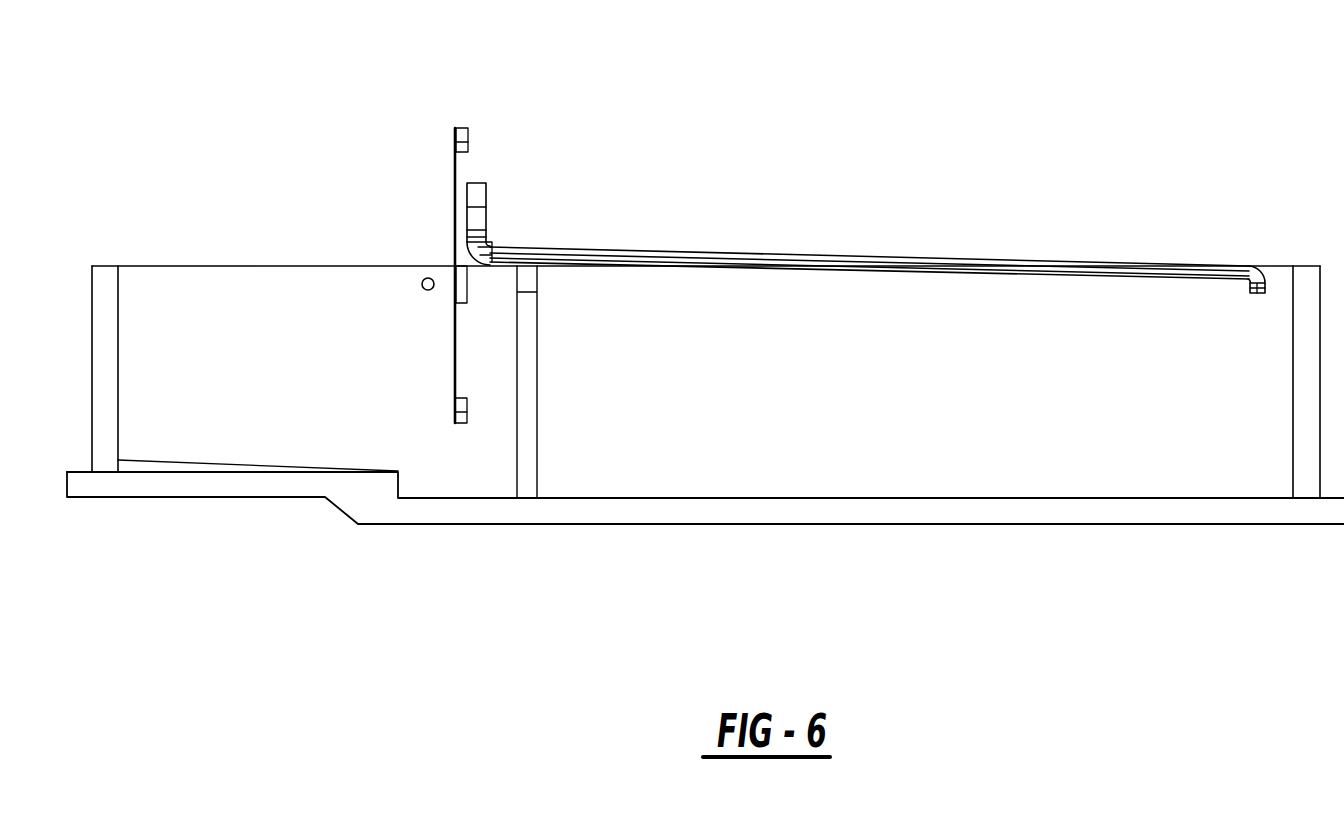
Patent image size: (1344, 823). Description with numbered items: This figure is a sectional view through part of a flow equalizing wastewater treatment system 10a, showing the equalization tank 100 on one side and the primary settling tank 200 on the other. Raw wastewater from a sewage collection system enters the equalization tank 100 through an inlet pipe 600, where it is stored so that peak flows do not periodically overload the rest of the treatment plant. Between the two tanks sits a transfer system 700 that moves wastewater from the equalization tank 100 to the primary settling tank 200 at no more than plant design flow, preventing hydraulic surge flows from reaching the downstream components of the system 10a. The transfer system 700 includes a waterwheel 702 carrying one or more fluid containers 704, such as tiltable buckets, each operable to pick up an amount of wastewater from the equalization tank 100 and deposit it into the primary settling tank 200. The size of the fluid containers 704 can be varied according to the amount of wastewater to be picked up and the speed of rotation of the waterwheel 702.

The equalization tank 100 is at (177, 250).
The flow equalizing wastewater treatment system 10a is at (873, 148).
The primary settling tank 200 is at (1278, 258).
The inlet pipe 600 is at (425, 268).
The transfer system 700 is at (488, 223).
The waterwheel 702 is at (454, 200).
The fluid container 704 is at (468, 280).